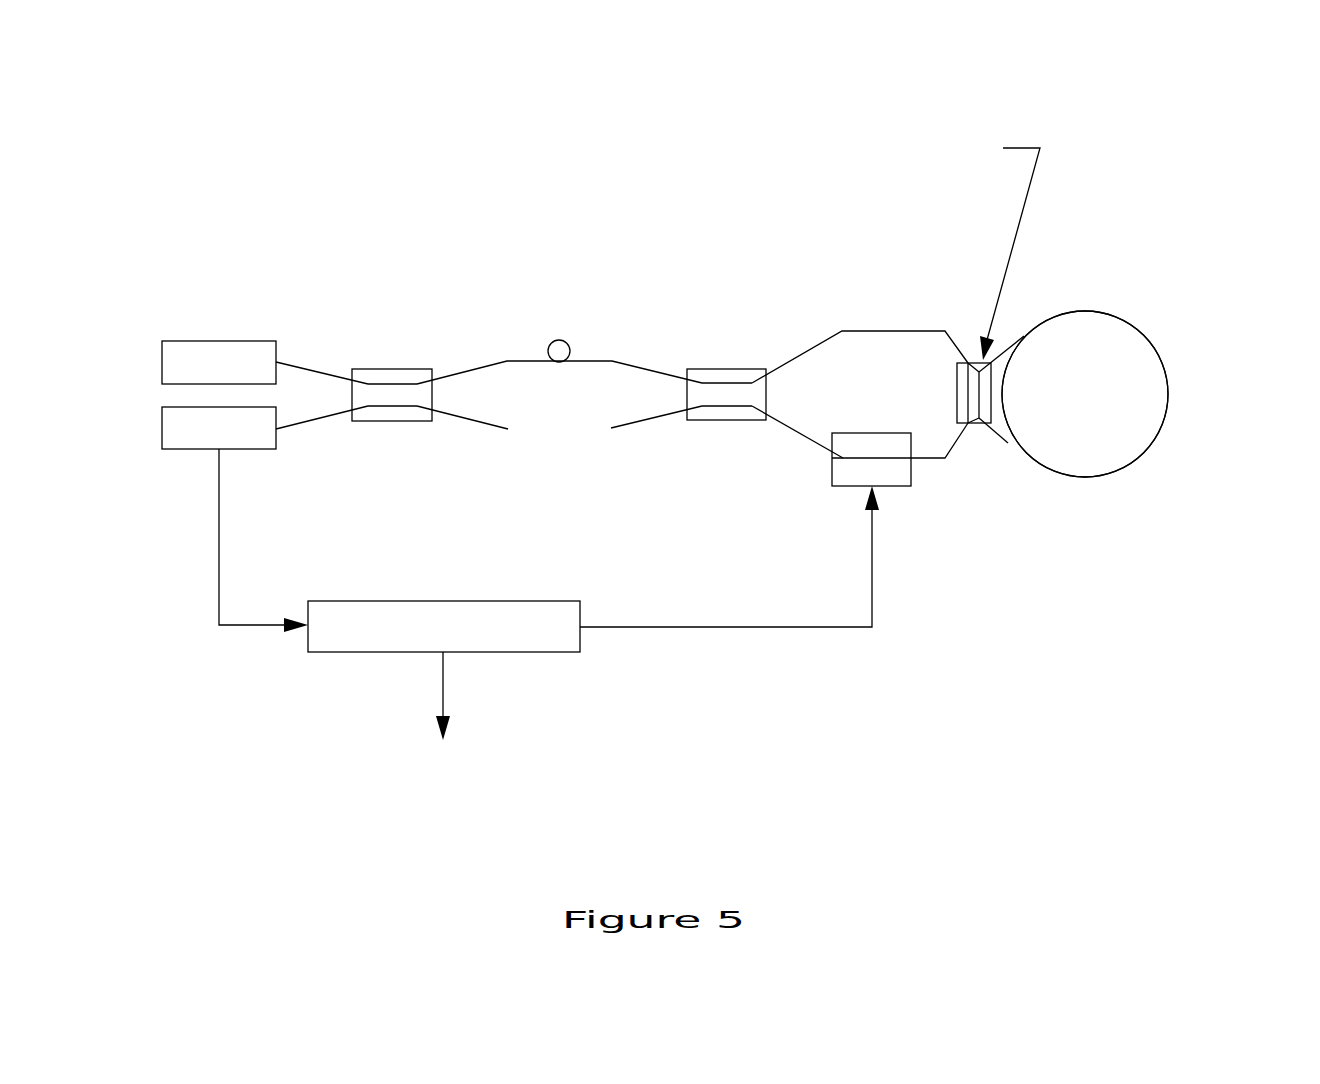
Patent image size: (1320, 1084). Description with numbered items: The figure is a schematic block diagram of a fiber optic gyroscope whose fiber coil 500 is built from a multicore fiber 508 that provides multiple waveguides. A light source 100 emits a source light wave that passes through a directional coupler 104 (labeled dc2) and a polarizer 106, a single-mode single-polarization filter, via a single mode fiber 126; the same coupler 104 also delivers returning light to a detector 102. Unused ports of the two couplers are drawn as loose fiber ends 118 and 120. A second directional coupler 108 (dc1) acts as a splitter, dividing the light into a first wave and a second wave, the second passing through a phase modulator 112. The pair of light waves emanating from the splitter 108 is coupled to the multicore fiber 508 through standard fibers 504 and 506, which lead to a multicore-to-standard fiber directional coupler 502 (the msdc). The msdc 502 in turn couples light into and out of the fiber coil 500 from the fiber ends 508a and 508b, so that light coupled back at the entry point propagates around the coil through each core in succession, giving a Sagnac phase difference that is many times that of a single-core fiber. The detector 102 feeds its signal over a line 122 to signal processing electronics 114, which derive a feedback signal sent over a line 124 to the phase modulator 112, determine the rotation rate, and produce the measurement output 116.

The light source 100 is at (211, 341).
The detector 102 is at (200, 450).
The directional coupler 104 is at (393, 369).
The polarizer 106 is at (555, 303).
The directional coupler 108 is at (728, 370).
The phase modulator 112 is at (895, 486).
The signal processing electronics 114 is at (397, 601).
The measurement output 116 is at (443, 697).
The unused fiber port of dc2 118 is at (492, 427).
The unused fiber port of dc1 120 is at (630, 424).
The detector signal line to signal processing 122 is at (239, 627).
The phase modulator drive line 124 is at (805, 627).
The single mode fiber 126 is at (487, 363).
The fiber coil 500 is at (1176, 384).
The multicore-to-standard fiber directional coupler 502 is at (967, 427).
The standard fiber 504 is at (880, 330).
The standard fiber 506 is at (925, 460).
The multicore fiber 508 is at (1122, 310).
The fiber end 508a is at (1002, 352).
The fiber end 508b is at (1008, 443).